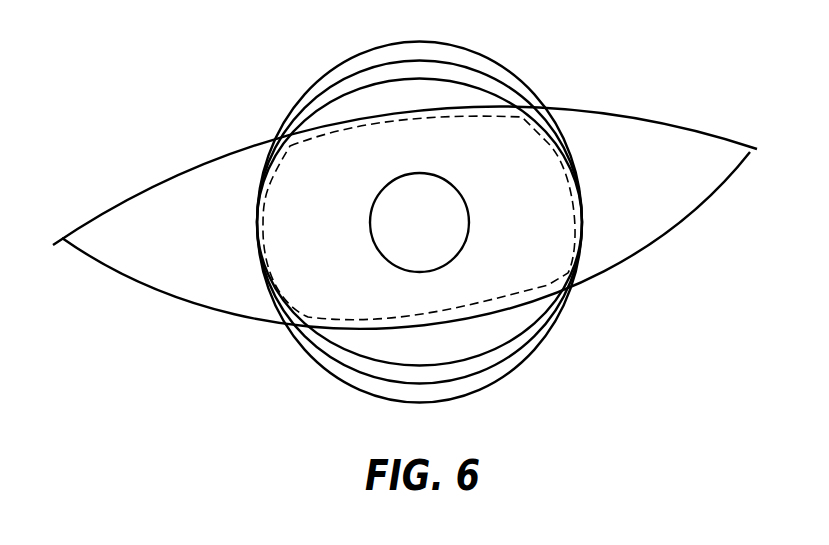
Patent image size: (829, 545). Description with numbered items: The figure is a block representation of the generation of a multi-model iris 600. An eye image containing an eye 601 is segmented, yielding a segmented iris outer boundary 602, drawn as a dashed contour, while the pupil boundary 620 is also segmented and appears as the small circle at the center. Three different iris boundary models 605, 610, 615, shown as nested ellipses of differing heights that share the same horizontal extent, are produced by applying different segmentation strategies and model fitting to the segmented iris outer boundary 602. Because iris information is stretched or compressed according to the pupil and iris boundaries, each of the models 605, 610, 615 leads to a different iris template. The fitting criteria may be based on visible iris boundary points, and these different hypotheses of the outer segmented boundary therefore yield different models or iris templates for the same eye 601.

The generation of a multi-model iris 600 is at (295, 31).
The eye 601 is at (647, 258).
The segmented iris outer boundary 602 is at (545, 137).
The iris boundary model 605 is at (470, 397).
The iris boundary model 610 is at (493, 367).
The iris boundary model 615 is at (522, 333).
The pupil boundary 620 is at (456, 188).